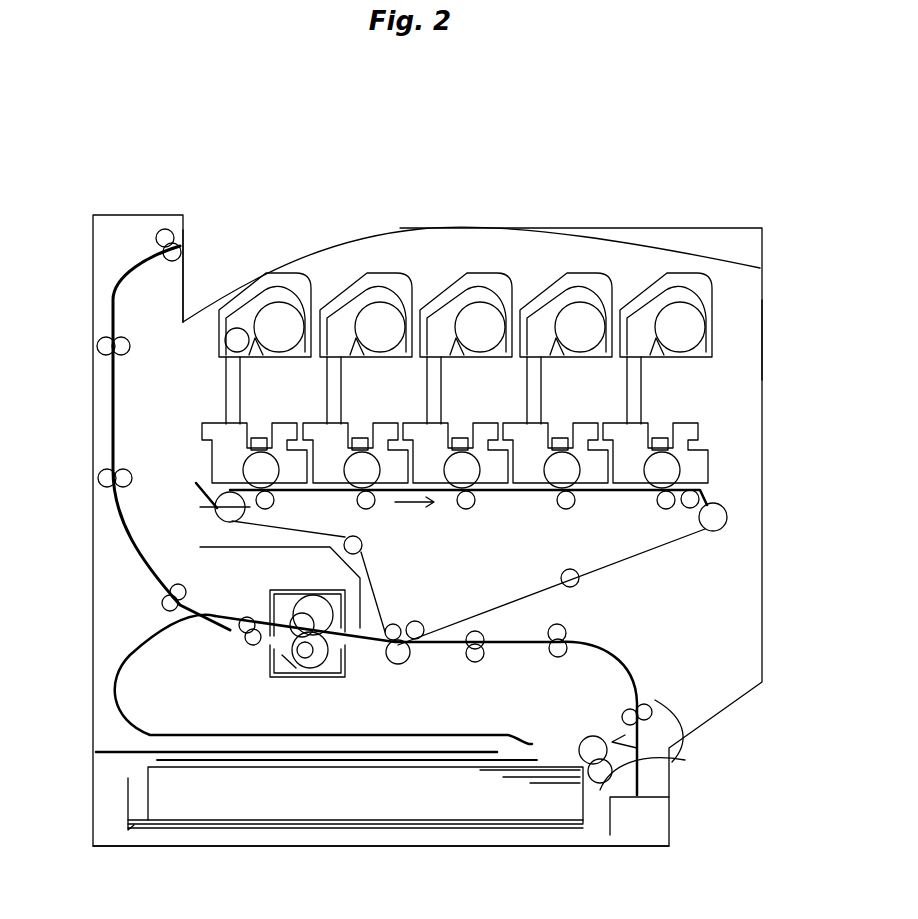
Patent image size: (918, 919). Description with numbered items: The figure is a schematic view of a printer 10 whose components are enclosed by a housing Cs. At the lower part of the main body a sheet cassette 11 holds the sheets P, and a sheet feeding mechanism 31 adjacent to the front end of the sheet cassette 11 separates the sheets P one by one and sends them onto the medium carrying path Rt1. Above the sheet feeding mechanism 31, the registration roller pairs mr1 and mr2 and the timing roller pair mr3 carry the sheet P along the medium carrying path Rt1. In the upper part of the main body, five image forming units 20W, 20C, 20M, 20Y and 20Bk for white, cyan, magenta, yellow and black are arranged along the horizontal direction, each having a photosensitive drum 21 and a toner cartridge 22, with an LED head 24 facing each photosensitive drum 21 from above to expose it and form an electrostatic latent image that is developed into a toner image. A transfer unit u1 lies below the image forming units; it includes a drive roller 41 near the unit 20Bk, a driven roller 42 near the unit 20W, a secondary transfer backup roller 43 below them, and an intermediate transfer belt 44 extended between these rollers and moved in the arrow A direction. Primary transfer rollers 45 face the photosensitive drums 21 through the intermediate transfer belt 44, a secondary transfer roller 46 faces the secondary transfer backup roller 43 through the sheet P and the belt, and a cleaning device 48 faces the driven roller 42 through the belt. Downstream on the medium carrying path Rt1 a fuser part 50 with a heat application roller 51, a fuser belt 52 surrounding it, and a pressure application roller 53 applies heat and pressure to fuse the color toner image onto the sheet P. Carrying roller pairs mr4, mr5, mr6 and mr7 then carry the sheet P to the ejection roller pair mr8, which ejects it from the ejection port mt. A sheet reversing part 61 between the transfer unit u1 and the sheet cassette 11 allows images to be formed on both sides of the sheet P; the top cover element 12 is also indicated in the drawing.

The printer 10 is at (749, 229).
The sheet cassette 11 is at (323, 848).
The top cover 12 is at (232, 283).
The white image forming unit 20W is at (285, 270).
The cyan image forming unit 20C is at (386, 270).
The magenta image forming unit 20M is at (486, 270).
The yellow image forming unit 20Y is at (586, 270).
The black image forming unit 20Bk is at (686, 270).
The photosensitive drum 21 is at (461, 470).
The toner cartridge 22 is at (479, 327).
The LED head 24 is at (260, 436).
The sheet feeding mechanism 31 is at (673, 763).
The drive roller 41 is at (720, 530).
The driven roller 42 is at (218, 522).
The secondary transfer backup roller 43 is at (408, 618).
The intermediate transfer belt 44 is at (504, 492).
The primary transfer roller 45 is at (265, 509).
The secondary transfer roller 46 is at (410, 666).
The cleaning device 48 is at (194, 482).
The fuser part 50 is at (352, 656).
The heat application roller 51 is at (292, 670).
The fuser belt 52 is at (306, 597).
The pressure application roller 53 is at (322, 670).
The sheet reversing part 61 is at (226, 753).
The arrow direction A is at (414, 512).
The housing Cs is at (764, 338).
The sheet P is at (540, 786).
The medium carrying path Rt1 is at (642, 676).
The registration roller pair mr1 is at (652, 714).
The registration roller pair mr2 is at (567, 626).
The timing roller pair mr3 is at (476, 663).
The carrying roller pair mr4 is at (251, 616).
The carrying roller pair mr5 is at (162, 603).
The carrying roller pair mr6 is at (98, 481).
The carrying roller pair mr7 is at (97, 347).
The ejection roller pair mr8 is at (168, 232).
The ejection port mt is at (191, 232).
The transfer unit u1 is at (642, 566).